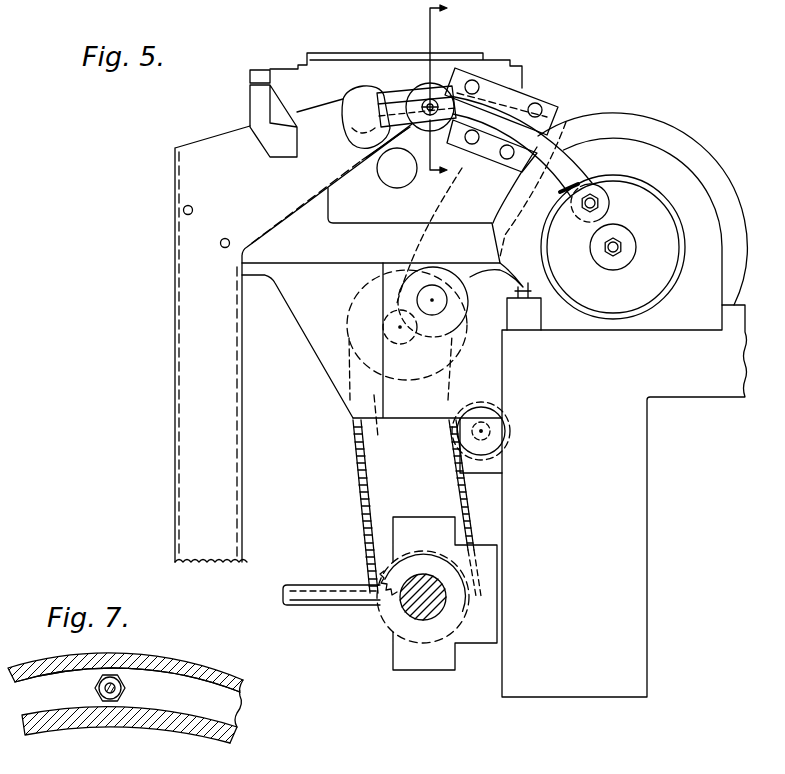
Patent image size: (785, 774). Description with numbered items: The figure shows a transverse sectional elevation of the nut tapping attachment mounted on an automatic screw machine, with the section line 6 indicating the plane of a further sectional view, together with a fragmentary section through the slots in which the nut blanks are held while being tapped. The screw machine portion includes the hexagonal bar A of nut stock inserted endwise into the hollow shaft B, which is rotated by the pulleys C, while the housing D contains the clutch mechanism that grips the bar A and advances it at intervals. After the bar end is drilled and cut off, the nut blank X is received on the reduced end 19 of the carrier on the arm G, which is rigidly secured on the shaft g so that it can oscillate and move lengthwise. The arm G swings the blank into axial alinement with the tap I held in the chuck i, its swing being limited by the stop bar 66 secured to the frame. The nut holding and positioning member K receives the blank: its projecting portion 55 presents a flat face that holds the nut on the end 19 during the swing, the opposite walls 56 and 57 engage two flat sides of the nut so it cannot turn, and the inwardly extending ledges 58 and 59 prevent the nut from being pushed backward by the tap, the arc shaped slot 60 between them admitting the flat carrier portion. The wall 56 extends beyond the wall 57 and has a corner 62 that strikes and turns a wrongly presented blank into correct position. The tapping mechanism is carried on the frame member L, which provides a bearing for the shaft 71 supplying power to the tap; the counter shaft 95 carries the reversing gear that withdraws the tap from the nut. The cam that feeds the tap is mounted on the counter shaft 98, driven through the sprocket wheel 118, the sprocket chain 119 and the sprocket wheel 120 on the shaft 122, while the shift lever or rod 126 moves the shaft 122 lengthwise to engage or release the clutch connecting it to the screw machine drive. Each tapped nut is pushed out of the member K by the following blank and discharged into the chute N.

In FIG. 5, the magazine or chute N is at (190, 183).
In FIG. 5, the stop bar 66 is at (270, 113).
In FIG. 5, the shaft 71 is at (357, 92).
In FIG. 5, the ledge 58 is at (399, 100).
In FIG. 5, the arc shaped slot 60 is at (398, 110).
In FIG. 5, the tap or tapping tool I is at (434, 101).
In FIG. 5, the chuck or tool holder i is at (431, 80).
In FIG. 5, the section line 6- 6 is at (425, 97).
In FIG. 5, the shoulder or wall 56 is at (497, 104).
In FIG. 7, the shoulder or wall 56 is at (200, 670).
In FIG. 5, the nut holding and positioning member K is at (529, 145).
In FIG. 7, the nut holding and positioning member K is at (127, 663).
In FIG. 5, the face or corner 62 is at (575, 145).
In FIG. 5, the projecting portion 55 is at (573, 173).
In FIG. 5, the pulleys C is at (680, 143).
In FIG. 5, the housing of holding or clutch mechanism D is at (693, 197).
In FIG. 5, the hollow shaft B is at (630, 258).
In FIG. 5, the bar A is at (620, 247).
In FIG. 5, the frame member L is at (624, 501).
In FIG. 5, the arm G is at (440, 205).
In FIG. 5, the counter shaft 95 is at (397, 168).
In FIG. 5, the ledge 59 is at (390, 150).
In FIG. 5, the shoulder or wall 57 is at (530, 130).
In FIG. 7, the shoulder or wall 57 is at (182, 716).
In FIG. 5, the shaft g is at (447, 330).
In FIG. 5, the counter shaft 98 is at (350, 415).
In FIG. 5, the sprocket wheel 118 is at (429, 368).
In FIG. 5, the sprocket chain 119 is at (367, 490).
In FIG. 5, the sprocket wheel 120 is at (387, 617).
In FIG. 5, the shaft 122 is at (415, 610).
In FIG. 5, the shift lever or rod 126 is at (308, 600).
In FIG. 7, the nut blank X is at (93, 685).
In FIG. 7, the reduced end 19 is at (122, 690).